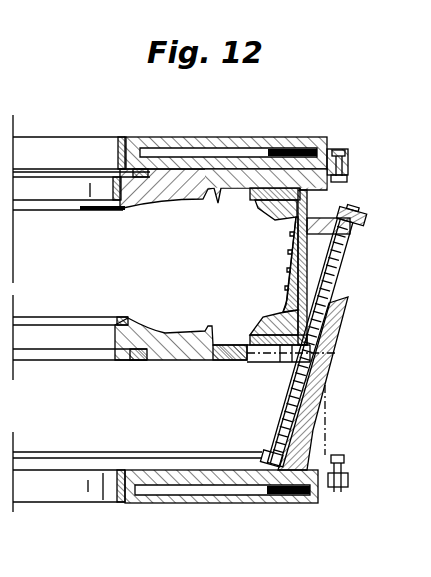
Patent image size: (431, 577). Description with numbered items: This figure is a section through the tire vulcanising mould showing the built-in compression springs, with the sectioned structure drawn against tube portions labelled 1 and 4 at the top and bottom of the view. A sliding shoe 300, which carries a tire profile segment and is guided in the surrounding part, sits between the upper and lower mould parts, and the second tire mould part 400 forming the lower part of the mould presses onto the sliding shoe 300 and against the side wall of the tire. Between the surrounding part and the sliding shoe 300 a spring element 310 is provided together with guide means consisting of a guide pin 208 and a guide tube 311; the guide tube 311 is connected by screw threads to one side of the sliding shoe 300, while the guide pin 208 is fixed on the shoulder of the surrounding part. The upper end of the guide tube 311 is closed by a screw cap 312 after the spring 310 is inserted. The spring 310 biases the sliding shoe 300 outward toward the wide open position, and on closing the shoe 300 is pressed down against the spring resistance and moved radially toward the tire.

The outer tube 1 is at (157, 137).
The lower tube 4 is at (170, 503).
The guide pin 208 is at (264, 466).
The sliding shoe 300 is at (282, 188).
The spring element 310 is at (278, 422).
The guide tube 311 is at (342, 287).
The screw cap 312 is at (346, 208).
The second tire mould part 400 is at (130, 193).